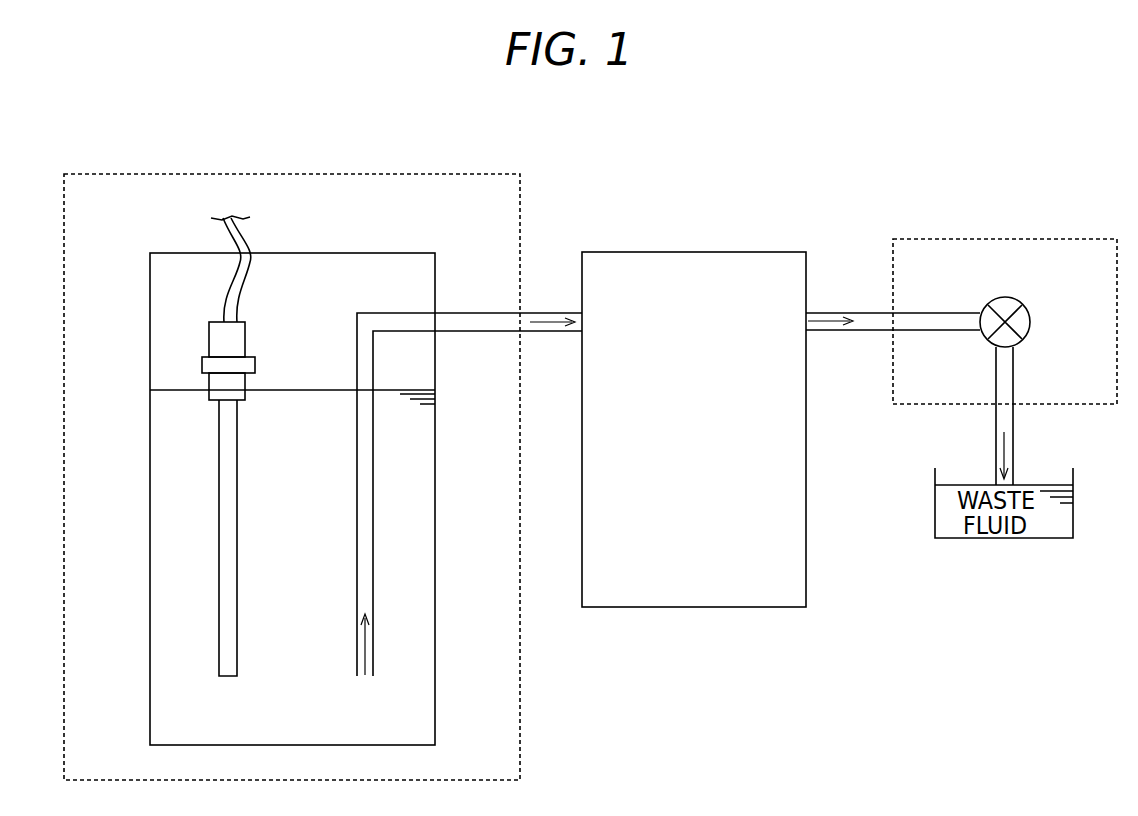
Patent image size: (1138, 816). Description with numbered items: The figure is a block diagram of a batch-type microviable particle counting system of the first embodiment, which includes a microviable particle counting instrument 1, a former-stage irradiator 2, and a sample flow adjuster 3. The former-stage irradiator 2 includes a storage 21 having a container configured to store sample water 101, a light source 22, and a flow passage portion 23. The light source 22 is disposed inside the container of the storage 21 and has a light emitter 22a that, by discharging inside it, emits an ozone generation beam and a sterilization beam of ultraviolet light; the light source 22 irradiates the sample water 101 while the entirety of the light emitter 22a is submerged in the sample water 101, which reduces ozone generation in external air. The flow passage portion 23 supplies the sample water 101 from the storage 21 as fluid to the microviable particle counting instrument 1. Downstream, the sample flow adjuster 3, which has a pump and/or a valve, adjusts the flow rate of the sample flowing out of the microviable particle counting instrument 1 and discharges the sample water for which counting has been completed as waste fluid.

The microviable particle counting instrument 1 is at (772, 251).
The former-stage irradiator 2 is at (480, 174).
The sample flow adjuster 3 is at (1090, 239).
The storage 21 is at (418, 253).
The light source 22 is at (250, 356).
The light emitter 22a is at (237, 537).
The flow passage portion 23 is at (455, 312).
The sample water 101 is at (272, 393).